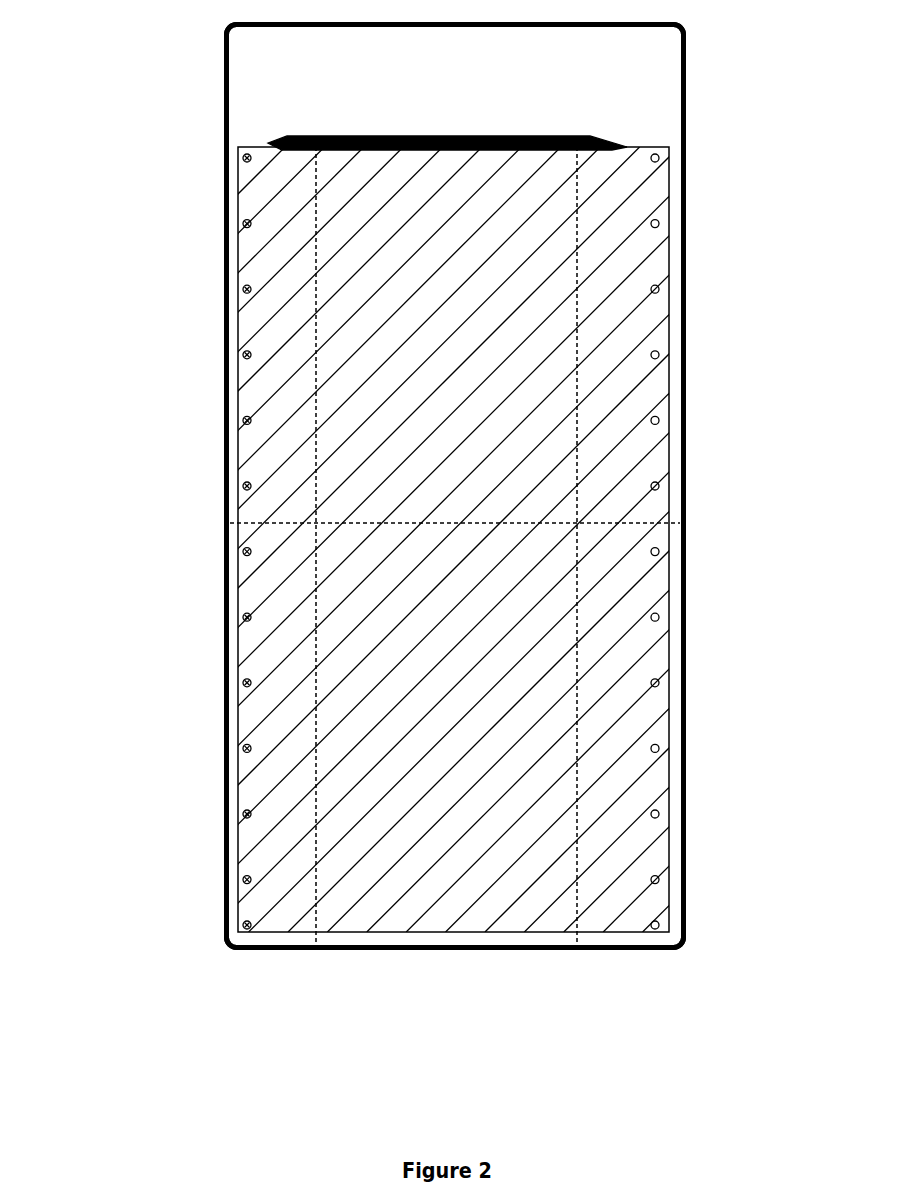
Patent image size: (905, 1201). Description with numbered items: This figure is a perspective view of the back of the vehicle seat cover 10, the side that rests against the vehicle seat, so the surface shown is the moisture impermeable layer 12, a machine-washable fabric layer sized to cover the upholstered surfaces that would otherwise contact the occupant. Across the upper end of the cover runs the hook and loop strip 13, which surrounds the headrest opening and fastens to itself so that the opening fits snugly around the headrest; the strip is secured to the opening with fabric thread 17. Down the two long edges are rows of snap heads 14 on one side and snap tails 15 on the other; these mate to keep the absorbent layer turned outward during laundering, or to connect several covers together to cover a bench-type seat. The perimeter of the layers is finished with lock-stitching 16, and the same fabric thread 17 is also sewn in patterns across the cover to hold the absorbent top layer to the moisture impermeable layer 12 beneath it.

The vehicle seat cover 10 is at (197, 872).
The moisture impermeable layer 12 is at (628, 335).
The hook and loop strip 13 is at (590, 135).
The snap head 14 is at (658, 550).
The snap tail 15 is at (243, 550).
The lock-stitching 16 is at (690, 816).
The fabric thread 17 is at (317, 347).